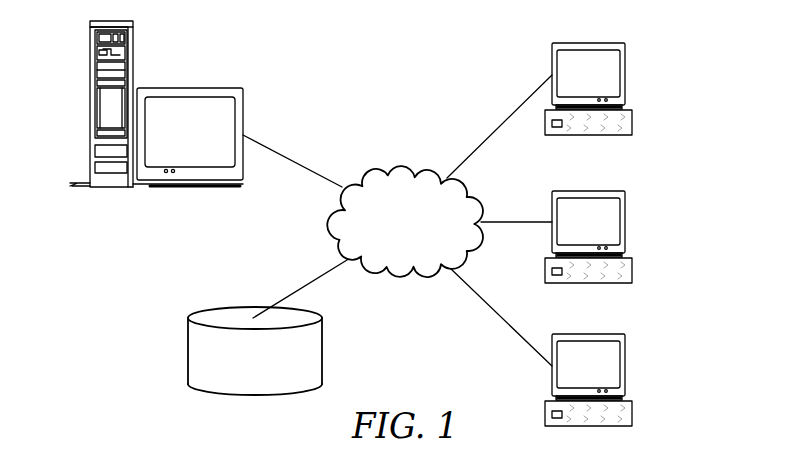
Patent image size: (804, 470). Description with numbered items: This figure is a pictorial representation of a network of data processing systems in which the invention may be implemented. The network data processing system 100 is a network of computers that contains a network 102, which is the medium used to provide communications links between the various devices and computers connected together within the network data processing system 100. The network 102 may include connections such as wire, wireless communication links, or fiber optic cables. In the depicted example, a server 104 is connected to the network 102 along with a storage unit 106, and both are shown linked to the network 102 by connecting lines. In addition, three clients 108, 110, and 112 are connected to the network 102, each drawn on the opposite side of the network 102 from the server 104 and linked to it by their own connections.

The network data processing system 100 is at (479, 52).
The network 102 is at (377, 170).
The server 104 is at (88, 105).
The storage unit 106 is at (188, 350).
The client 108 is at (627, 72).
The client 110 is at (627, 210).
The client 112 is at (627, 365).